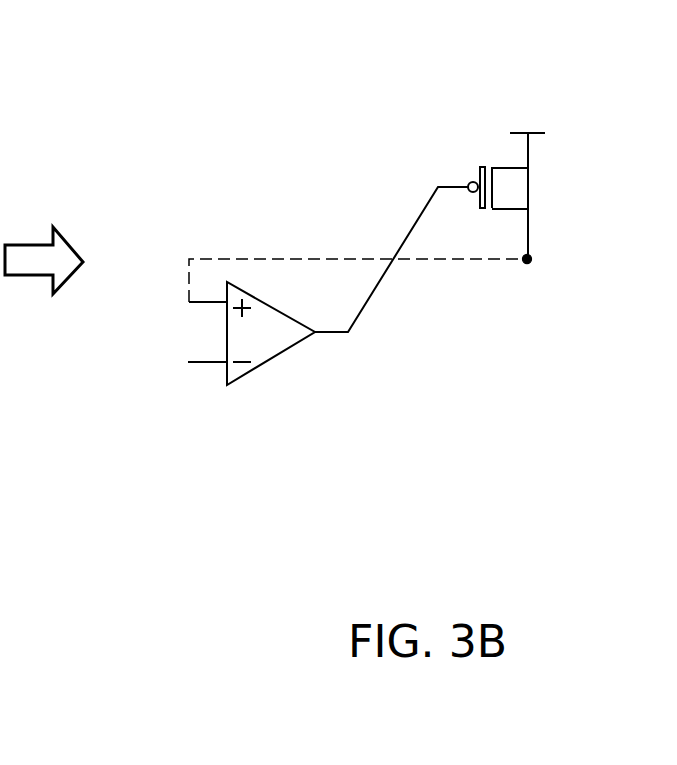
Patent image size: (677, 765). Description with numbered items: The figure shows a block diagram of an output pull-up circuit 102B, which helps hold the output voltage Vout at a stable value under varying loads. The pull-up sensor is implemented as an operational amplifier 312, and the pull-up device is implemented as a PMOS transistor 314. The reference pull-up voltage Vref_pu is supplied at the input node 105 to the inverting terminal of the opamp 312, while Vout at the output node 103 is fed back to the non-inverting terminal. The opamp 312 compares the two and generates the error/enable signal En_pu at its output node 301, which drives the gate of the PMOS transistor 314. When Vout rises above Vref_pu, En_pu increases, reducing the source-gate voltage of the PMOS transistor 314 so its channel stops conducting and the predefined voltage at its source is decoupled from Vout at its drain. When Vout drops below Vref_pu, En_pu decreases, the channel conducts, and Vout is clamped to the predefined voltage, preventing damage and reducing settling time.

The output pull-up circuit 102B is at (188, 120).
The operational amplifier 312 is at (273, 360).
The PMOS transistor 314 is at (535, 172).
The output node 301 is at (358, 241).
The input node 105 is at (169, 365).
The output node 103 is at (563, 265).